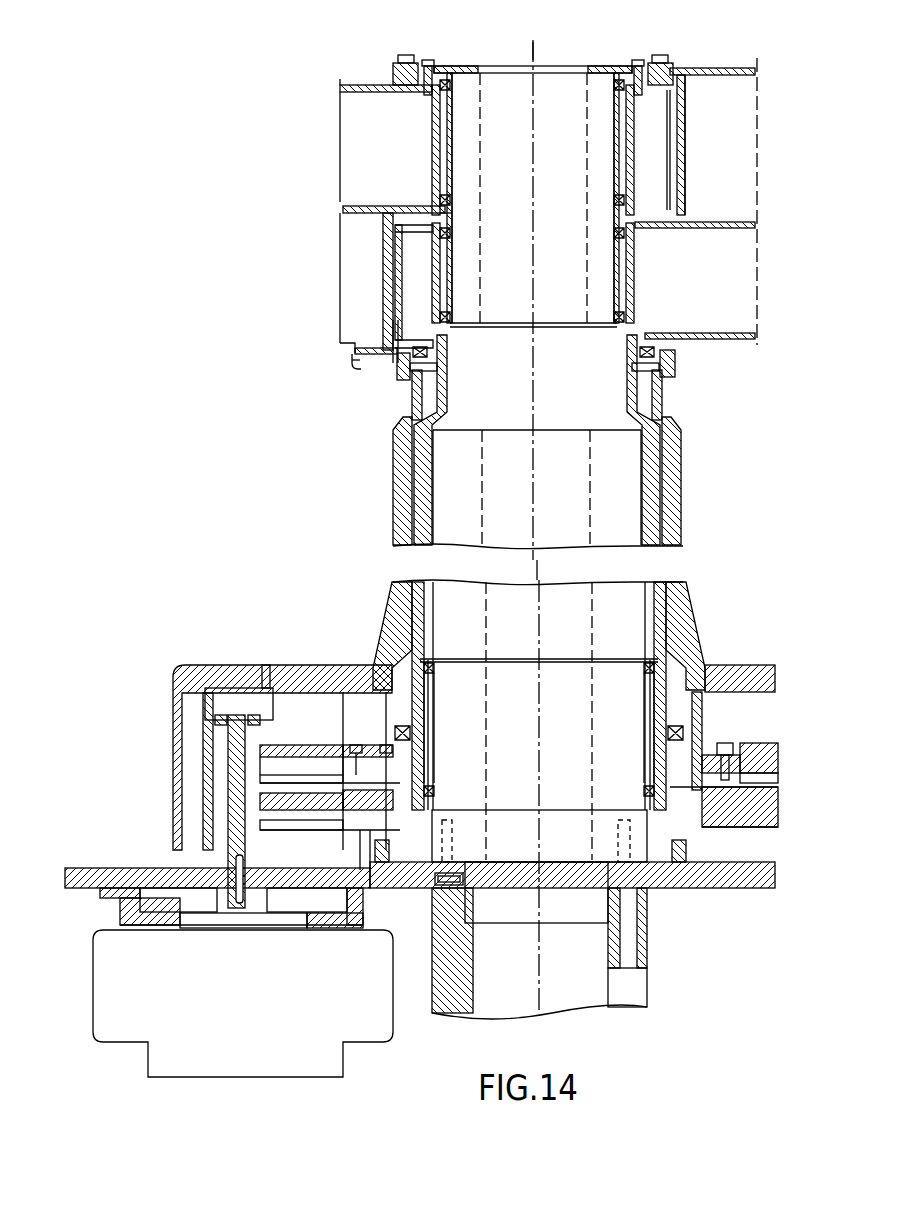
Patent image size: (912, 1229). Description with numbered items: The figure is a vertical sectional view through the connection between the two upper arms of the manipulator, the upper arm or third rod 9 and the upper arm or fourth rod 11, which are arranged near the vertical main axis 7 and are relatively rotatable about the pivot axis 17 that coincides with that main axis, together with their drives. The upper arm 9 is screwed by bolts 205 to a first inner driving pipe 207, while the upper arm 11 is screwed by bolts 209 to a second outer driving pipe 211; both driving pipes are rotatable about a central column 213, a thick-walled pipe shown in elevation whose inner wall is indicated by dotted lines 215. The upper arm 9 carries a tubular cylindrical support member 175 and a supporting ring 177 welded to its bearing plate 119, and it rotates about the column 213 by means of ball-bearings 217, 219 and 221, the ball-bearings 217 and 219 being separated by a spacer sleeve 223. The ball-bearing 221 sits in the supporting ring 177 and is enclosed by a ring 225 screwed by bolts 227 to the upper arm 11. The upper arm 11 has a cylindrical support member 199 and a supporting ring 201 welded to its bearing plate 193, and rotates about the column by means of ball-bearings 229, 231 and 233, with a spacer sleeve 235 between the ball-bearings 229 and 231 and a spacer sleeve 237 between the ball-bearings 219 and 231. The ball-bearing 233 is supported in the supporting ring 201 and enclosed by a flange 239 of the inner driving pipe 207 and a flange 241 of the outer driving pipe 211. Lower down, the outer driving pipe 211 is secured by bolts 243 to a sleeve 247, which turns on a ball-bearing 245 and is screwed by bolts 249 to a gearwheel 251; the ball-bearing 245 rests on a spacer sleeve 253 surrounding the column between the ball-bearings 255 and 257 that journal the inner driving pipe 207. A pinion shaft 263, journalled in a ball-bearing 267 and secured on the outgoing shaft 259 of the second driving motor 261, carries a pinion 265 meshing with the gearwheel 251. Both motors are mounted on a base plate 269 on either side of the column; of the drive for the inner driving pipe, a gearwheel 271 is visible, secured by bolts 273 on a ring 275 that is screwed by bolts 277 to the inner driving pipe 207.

The vertical main axis 7 is at (538, 489).
The upper arm (third rod) 9 is at (723, 74).
The upper arm (fourth rod) 11 is at (376, 92).
The vertical pivot axis 17 is at (536, 525).
The bearing plate 119 is at (706, 68).
The tubular cylindrical support member 175 is at (634, 262).
The supporting ring 177 is at (394, 68).
The bearing plate 193 is at (358, 354).
The cylindrical support member 199 is at (432, 150).
The supporting ring 201 is at (360, 366).
The bolts 205 is at (446, 380).
The first inner driving pipe 207 is at (660, 490).
The bolts 209 is at (401, 380).
The second outer driving pipe 211 is at (392, 465).
The central column 213 is at (626, 277).
The inner wall of central column 215 is at (585, 156).
The ball-bearing 217 is at (450, 316).
The ball-bearing 219 is at (450, 233).
The ball-bearing 221 is at (410, 60).
The spacer sleeve 223 is at (626, 270).
The ring 225 is at (448, 64).
The bolts 227 is at (430, 62).
The ball-bearing 229 is at (450, 90).
The ball-bearing 231 is at (450, 200).
The ball-bearing 233 is at (428, 354).
The spacer sleeve 235 is at (452, 154).
The spacer sleeve 237 is at (450, 218).
The flange of inner driving pipe 239 is at (391, 322).
The flange of outer driving pipe 241 is at (402, 370).
The bolts 243 is at (350, 746).
The ball-bearing 245 is at (408, 732).
The sleeve 247 is at (356, 744).
The bolts 249 is at (724, 744).
The gearwheel 251 is at (288, 744).
The spacer sleeve 253 is at (430, 704).
The ball-bearing 255 is at (436, 663).
The ball-bearing 257 is at (430, 792).
The outgoing shaft 259 is at (242, 908).
The second driving motor 261 is at (136, 1010).
The pinion shaft 263 is at (228, 806).
The pinion 265 is at (205, 747).
The ball-bearing 267 is at (215, 720).
The base plate 269 is at (415, 892).
The gearwheel 271 is at (292, 820).
The bolts 273 is at (340, 820).
The ring 275 is at (460, 811).
The bolts 277 is at (380, 828).